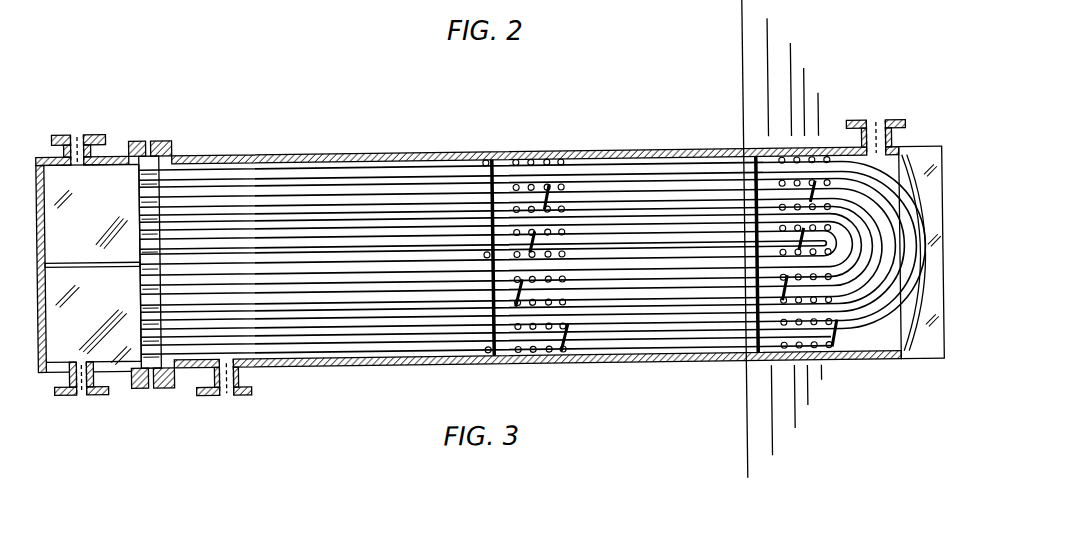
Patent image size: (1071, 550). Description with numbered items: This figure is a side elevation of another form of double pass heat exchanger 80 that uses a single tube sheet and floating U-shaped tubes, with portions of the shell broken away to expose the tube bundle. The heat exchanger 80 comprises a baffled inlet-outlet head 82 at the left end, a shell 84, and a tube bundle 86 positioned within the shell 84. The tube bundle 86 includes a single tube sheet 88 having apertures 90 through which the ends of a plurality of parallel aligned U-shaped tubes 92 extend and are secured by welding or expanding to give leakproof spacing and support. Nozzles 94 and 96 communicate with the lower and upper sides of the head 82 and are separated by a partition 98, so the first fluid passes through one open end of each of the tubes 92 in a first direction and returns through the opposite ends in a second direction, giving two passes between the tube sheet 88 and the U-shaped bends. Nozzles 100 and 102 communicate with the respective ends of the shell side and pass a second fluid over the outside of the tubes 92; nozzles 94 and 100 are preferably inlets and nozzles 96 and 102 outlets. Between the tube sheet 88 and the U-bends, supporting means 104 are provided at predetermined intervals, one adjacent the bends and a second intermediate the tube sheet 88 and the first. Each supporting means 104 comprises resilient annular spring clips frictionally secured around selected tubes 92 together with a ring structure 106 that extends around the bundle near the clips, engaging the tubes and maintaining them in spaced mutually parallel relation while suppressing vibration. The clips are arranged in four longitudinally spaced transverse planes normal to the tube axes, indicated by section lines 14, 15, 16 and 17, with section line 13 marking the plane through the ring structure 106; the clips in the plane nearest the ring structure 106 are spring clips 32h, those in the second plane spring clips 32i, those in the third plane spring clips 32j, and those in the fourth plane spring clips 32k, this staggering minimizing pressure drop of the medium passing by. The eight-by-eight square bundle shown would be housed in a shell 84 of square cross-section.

The double pass heat exchanger 80 is at (916, 150).
The baffled inlet-outlet head 82 is at (39, 152).
The shell 84 is at (230, 153).
The tube bundle 86 is at (280, 172).
The tube sheet 88 is at (163, 151).
The apertures 90 is at (149, 137).
The U-shaped tubes 92 is at (318, 271).
The nozzle 94 is at (89, 390).
The nozzle 96 is at (85, 130).
The partition 98 is at (81, 258).
The nozzle 100 is at (224, 392).
The nozzle 102 is at (864, 126).
The supporting means 104 is at (578, 184).
The ring structure 106 is at (491, 161).
The spring clips 32h is at (517, 160).
The spring clips 32i is at (530, 160).
The spring clips 32j is at (548, 160).
The spring clips 32k is at (561, 160).
The section line 13- 13 is at (745, 481).
The section line 14- 14 is at (823, 459).
The section line 15- 15 is at (793, 47).
The section line 16- 16 is at (806, 72).
The section line 17- 17 is at (820, 97).